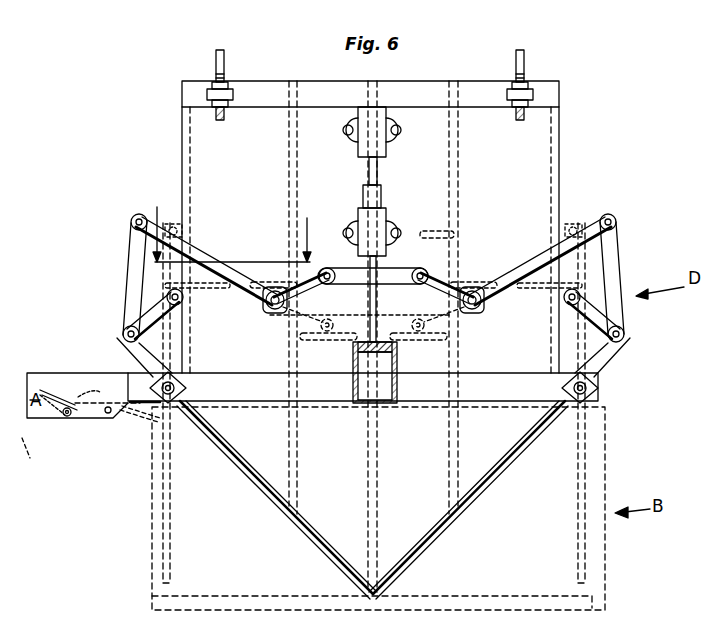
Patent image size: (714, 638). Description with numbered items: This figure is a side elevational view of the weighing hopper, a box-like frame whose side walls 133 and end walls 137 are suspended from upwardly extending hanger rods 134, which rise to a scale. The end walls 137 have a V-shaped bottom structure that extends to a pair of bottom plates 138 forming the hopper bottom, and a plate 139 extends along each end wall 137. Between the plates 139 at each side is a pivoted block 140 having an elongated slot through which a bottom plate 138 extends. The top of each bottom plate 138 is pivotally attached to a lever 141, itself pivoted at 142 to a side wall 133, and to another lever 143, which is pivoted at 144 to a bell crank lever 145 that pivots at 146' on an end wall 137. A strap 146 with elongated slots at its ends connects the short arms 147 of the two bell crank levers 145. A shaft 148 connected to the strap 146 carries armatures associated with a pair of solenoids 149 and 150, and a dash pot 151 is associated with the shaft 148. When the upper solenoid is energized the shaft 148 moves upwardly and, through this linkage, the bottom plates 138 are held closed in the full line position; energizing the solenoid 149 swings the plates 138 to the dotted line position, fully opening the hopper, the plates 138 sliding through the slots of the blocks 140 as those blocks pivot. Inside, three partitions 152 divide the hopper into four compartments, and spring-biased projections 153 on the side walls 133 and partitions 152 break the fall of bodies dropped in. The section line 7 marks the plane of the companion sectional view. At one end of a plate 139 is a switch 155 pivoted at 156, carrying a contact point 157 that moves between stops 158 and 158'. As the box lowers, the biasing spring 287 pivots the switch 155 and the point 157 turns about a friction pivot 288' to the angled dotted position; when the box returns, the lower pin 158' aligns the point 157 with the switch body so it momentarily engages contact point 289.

The section line 7- 7 is at (234, 226).
The side walls 133 is at (182, 138).
The hanger rods 134 is at (222, 56).
The end walls 137 is at (540, 128).
The bottom plates 138 is at (172, 519).
The plate 139 is at (499, 395).
The pivoted block 140 is at (187, 389).
The lever 141 is at (150, 322).
The pivot 142 is at (180, 304).
The lever 143 is at (213, 172).
The pivot 144 is at (139, 213).
The bell crank lever 145 is at (265, 198).
The strap 146 is at (373, 260).
The pivot 146' is at (370, 318).
The short arms 147 is at (291, 289).
The shaft 148 is at (377, 172).
The solenoid 149 is at (384, 218).
The solenoid 150 is at (358, 151).
The dash pot 151 is at (397, 362).
The partitions 152 is at (288, 140).
The projections 153 is at (440, 241).
The switch 155 is at (90, 420).
The pivot 156 is at (118, 421).
The contact point 157 is at (52, 390).
The stop 158 is at (63, 370).
The stop 158' is at (45, 421).
The biasing spring 287 is at (97, 398).
The friction pivot 288' is at (101, 372).
The contact point 289 is at (30, 458).